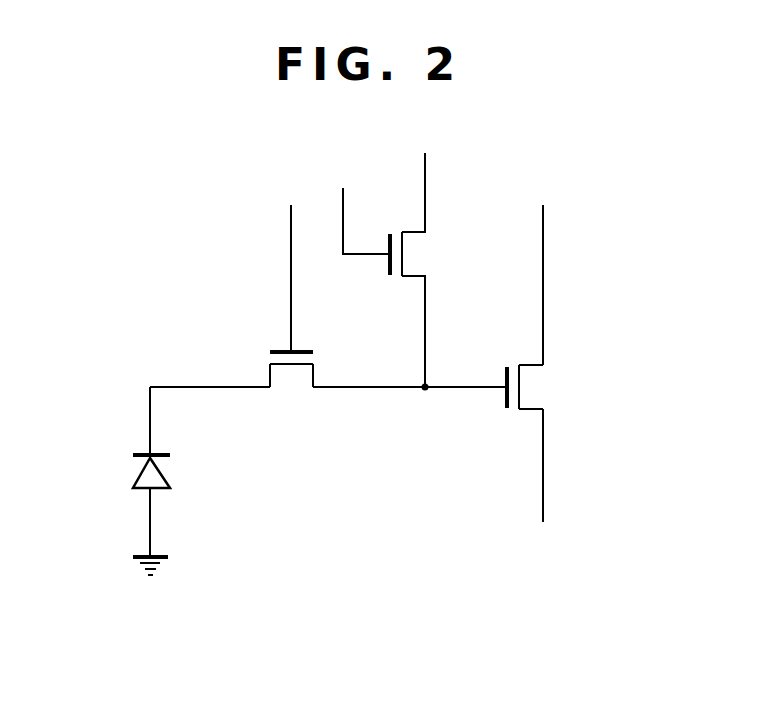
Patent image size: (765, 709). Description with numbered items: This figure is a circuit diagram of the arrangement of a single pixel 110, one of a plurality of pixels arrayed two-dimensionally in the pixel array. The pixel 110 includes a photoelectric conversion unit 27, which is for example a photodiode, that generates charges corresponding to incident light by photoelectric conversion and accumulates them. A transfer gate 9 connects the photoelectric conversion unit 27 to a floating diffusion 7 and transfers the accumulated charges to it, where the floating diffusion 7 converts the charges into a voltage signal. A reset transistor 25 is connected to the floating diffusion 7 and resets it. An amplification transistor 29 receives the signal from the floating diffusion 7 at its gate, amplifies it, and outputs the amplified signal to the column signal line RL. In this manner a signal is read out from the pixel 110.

The pixel 110 is at (103, 604).
The photoelectric conversion unit 27 is at (178, 474).
The transfer gate 9 is at (262, 357).
The reset transistor 25 is at (397, 232).
The floating diffusion 7 is at (422, 404).
The amplification transistor 29 is at (515, 363).
The column signal line RL is at (558, 486).